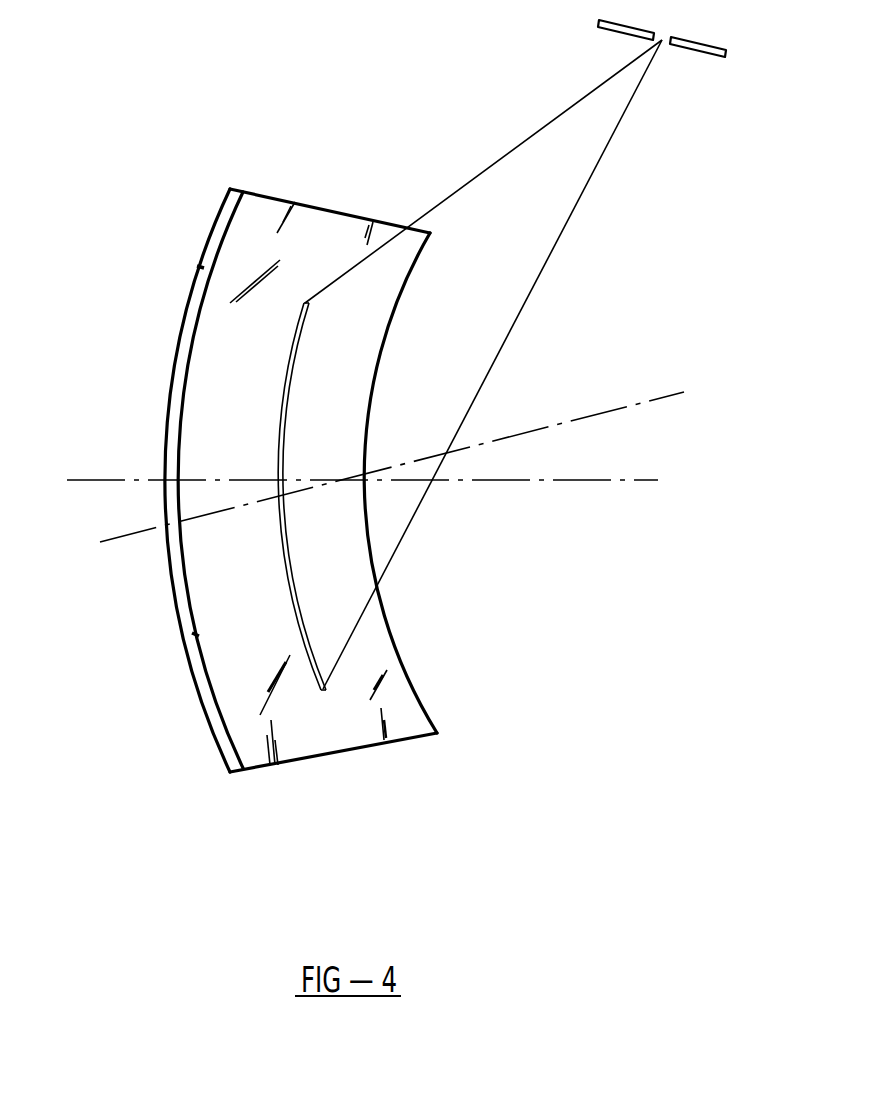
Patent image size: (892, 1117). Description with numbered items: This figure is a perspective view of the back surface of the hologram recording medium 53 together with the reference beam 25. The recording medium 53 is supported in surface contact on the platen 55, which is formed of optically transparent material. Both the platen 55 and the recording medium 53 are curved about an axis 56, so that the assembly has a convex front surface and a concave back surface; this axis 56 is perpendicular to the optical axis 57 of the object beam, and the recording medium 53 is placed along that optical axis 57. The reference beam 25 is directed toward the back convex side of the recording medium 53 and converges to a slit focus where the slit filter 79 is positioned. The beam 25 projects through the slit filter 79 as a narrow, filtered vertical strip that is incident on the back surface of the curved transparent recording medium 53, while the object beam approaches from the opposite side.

The reference beam 25 is at (510, 256).
The hologram recording medium 53 is at (177, 359).
The platen 55 is at (393, 696).
The axis 56 is at (655, 402).
The optical axis 57 is at (600, 481).
The slit filter 79 is at (692, 52).